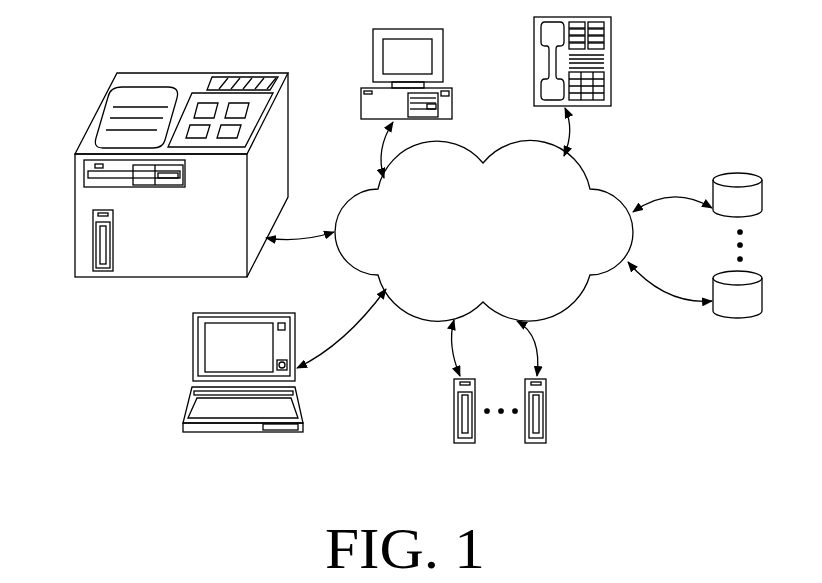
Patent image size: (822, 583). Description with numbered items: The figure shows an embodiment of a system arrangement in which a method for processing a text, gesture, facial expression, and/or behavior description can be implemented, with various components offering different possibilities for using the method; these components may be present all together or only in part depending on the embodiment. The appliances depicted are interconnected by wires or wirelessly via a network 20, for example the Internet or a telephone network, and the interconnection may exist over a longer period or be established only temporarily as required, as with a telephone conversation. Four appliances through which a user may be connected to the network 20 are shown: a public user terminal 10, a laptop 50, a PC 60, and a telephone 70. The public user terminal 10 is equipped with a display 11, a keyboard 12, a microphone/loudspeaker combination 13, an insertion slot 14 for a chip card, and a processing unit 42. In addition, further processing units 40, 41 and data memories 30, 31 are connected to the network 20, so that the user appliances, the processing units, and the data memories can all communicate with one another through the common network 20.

The public user terminal 10 is at (151, 157).
The display 11 is at (118, 92).
The keyboard 12 is at (198, 93).
The microphone/loudspeaker combination 13 is at (262, 75).
The insertion slot 14 is at (87, 178).
The processing unit 42 is at (93, 257).
The network 20 is at (357, 192).
The data memory 30 is at (738, 173).
The data memory 31 is at (752, 273).
The processing unit 40 is at (465, 445).
The processing unit 41 is at (535, 445).
The laptop 50 is at (192, 357).
The PC 60 is at (373, 58).
The telephone 70 is at (534, 55).